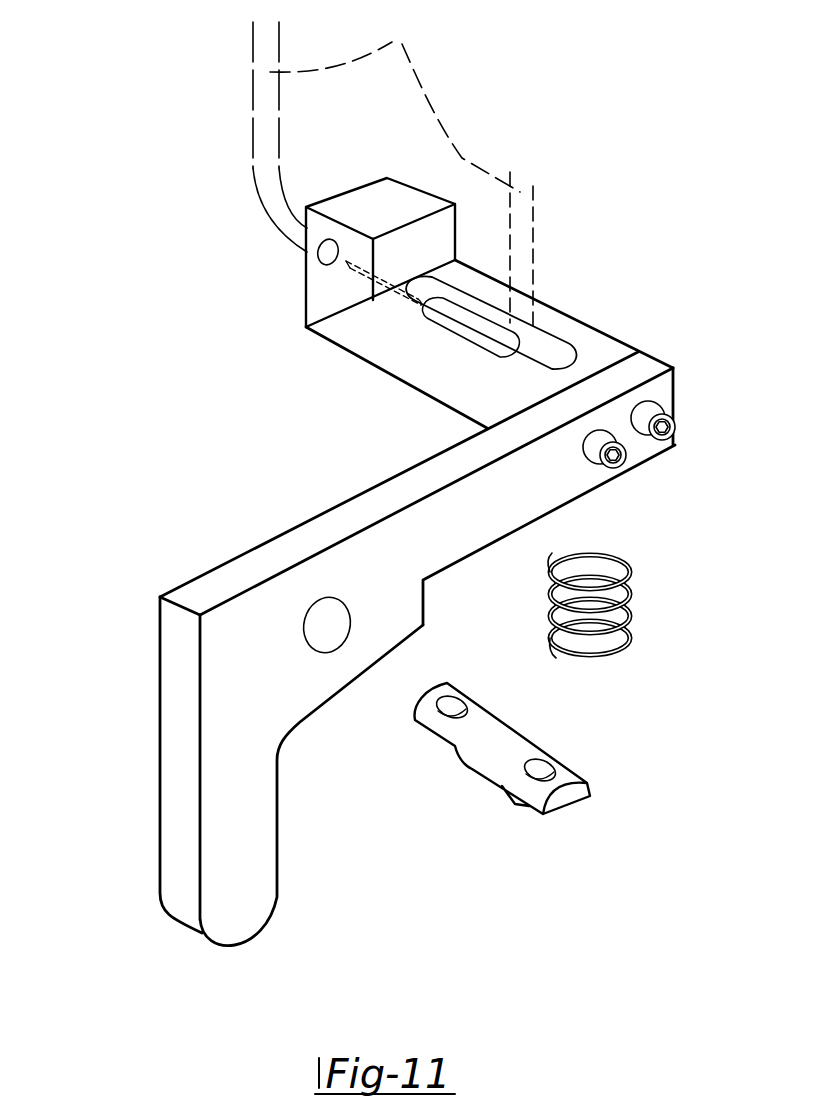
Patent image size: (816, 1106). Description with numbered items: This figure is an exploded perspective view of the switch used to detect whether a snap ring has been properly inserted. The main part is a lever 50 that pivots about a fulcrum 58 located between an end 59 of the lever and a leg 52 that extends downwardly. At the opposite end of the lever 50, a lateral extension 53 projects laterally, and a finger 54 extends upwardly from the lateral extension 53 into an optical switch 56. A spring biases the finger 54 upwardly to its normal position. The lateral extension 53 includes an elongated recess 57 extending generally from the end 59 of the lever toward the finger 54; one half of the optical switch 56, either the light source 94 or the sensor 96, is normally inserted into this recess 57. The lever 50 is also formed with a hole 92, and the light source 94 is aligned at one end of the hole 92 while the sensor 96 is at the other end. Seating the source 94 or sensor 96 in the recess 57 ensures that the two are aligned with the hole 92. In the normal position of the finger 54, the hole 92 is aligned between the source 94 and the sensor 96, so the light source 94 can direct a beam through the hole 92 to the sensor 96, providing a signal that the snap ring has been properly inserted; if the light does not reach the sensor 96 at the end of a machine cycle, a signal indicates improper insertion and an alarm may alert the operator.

The lever 50 is at (288, 531).
The leg 52 is at (162, 782).
The lateral extension 53 is at (597, 330).
The finger 54 is at (374, 208).
The optical switch 56 is at (401, 173).
The recess 57 is at (545, 348).
The fulcrum 58 is at (472, 769).
The end of lever 59 is at (675, 377).
The hole 92 is at (360, 277).
The light source 94 is at (277, 213).
The sensor 96 is at (455, 322).